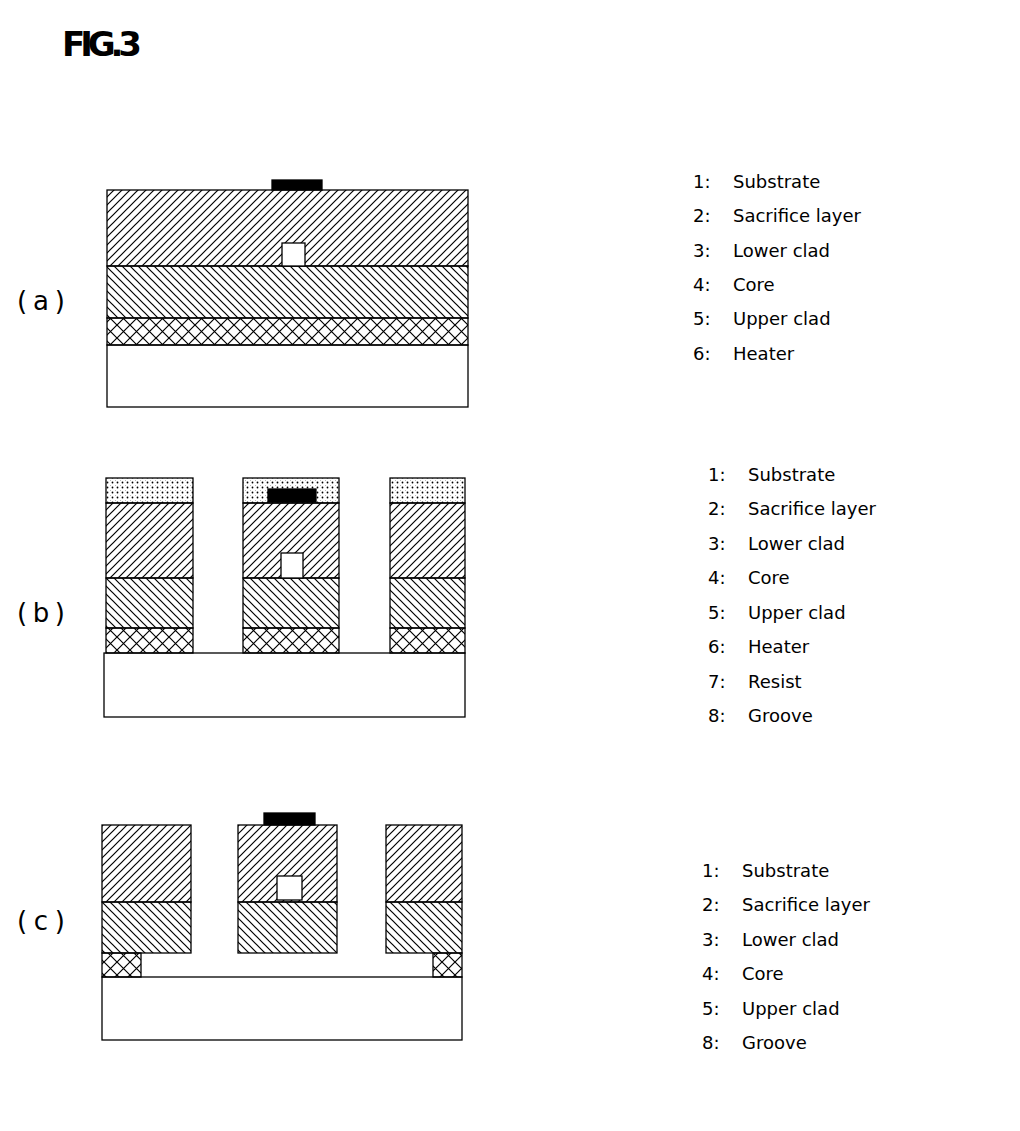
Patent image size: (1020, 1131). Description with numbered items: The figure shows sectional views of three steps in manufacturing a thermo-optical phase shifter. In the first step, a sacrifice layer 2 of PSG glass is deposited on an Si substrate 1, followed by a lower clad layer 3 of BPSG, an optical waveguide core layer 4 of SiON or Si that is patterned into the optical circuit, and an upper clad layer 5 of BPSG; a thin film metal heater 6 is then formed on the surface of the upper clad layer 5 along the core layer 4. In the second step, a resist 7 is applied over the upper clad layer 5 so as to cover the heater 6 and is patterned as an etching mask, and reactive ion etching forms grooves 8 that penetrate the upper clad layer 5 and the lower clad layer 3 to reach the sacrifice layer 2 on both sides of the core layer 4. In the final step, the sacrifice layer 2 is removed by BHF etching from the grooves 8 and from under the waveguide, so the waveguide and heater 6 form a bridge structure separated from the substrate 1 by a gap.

The substrate 1 is at (440, 382).
The sacrifice layer 2 is at (440, 333).
The lower clad layer 3 is at (455, 295).
The optical waveguide core layer 4 is at (293, 255).
The upper clad layer 5 is at (445, 217).
The thin film metal heater 6 is at (322, 183).
The resist 7 is at (455, 495).
The grooves 8 is at (217, 542).